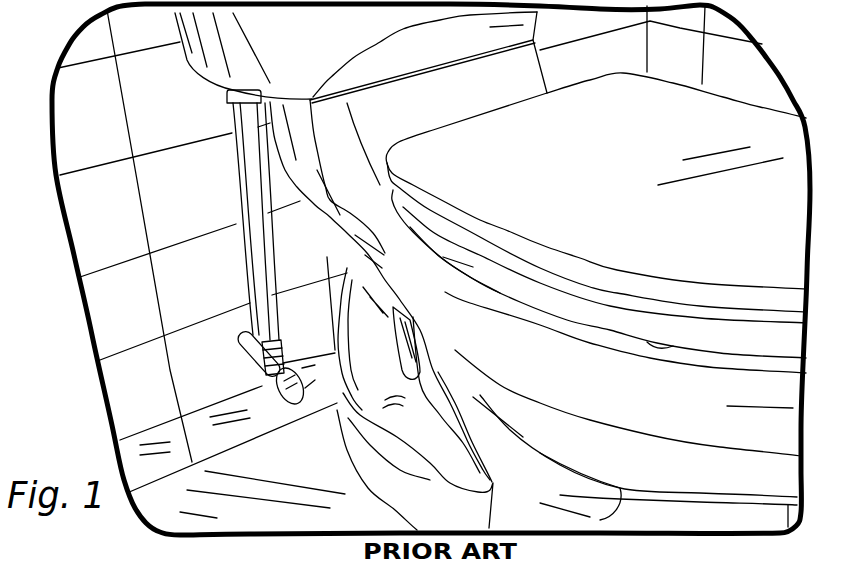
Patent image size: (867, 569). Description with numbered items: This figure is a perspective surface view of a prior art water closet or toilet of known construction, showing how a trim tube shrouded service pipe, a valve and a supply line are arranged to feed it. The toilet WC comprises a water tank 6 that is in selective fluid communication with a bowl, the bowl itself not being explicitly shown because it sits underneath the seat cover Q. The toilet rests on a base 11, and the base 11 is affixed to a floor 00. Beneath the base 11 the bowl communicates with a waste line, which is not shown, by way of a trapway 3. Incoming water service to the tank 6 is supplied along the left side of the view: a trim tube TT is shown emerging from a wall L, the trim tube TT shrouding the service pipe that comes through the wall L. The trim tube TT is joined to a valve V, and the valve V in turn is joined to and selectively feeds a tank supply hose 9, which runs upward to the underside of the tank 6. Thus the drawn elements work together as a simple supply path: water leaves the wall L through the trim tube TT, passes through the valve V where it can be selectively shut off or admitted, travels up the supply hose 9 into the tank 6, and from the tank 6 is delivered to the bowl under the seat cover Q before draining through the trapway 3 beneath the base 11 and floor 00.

The water tank 6 is at (361, 57).
The tank supply hose 9 is at (247, 172).
The trim tube TT is at (240, 353).
The valve V is at (243, 381).
The trapway 3 is at (381, 291).
The base 11 is at (415, 461).
The water closet WC is at (599, 358).
The seat cover Q is at (596, 198).
The wall L is at (410, 234).
The floor 00 is at (236, 460).